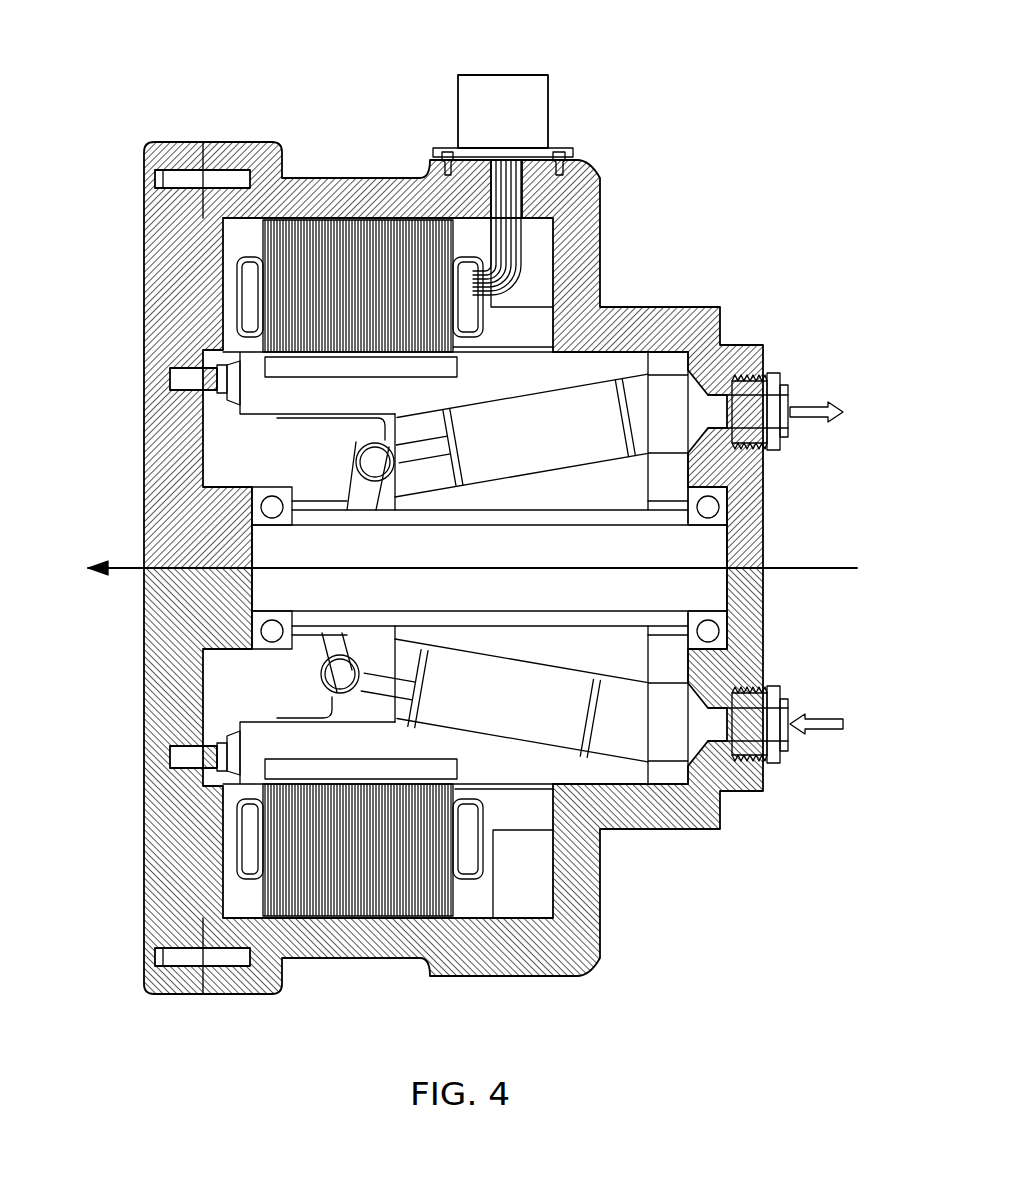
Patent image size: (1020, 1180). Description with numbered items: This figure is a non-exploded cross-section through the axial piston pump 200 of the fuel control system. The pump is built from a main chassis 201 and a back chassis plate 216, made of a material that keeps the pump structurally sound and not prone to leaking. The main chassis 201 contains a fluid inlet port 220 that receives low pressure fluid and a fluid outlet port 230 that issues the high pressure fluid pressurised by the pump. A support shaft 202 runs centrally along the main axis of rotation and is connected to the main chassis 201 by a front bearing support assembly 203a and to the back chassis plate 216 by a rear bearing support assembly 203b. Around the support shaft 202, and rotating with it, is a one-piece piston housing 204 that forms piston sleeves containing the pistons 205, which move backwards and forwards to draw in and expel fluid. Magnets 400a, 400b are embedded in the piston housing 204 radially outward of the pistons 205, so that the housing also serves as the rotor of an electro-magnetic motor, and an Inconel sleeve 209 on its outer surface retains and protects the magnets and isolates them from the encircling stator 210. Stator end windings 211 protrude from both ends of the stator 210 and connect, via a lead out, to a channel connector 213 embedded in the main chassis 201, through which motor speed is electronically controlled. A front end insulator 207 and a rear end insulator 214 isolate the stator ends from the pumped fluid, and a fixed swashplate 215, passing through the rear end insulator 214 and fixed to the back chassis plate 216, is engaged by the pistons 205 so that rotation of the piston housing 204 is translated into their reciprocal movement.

The axial piston pump 200 is at (692, 152).
The main chassis 201 is at (400, 185).
The support shaft 202 is at (710, 593).
The front bearing support assembly 203a is at (710, 507).
The rear bearing support assembly 203b is at (262, 505).
The piston housing 204 is at (588, 367).
The pistons 205 is at (530, 817).
The front end insulator 207 is at (548, 730).
The Inconel sleeve 209 is at (455, 785).
The stator 210 is at (345, 220).
The stator end windings 211 is at (252, 290).
The channel connector 213 is at (525, 95).
The rear end insulator 214 is at (238, 893).
The swashplate 215 is at (228, 430).
The back chassis plate 216 is at (176, 165).
The fluid inlet port 220 is at (770, 740).
The fluid outlet port 230 is at (775, 400).
The magnet 400a is at (232, 351).
The magnet 400b is at (250, 768).